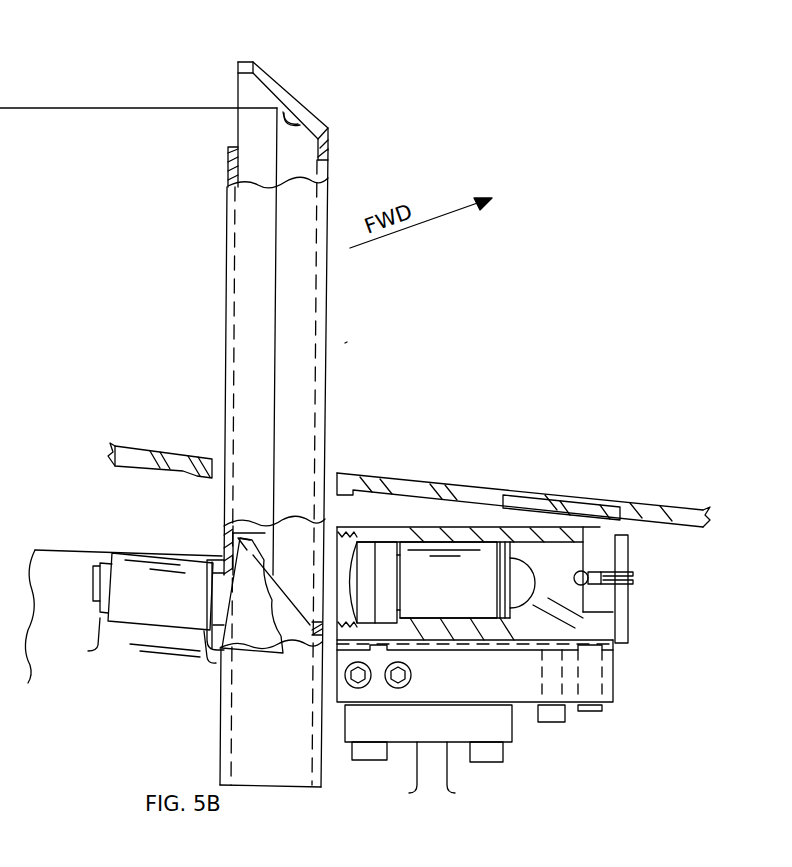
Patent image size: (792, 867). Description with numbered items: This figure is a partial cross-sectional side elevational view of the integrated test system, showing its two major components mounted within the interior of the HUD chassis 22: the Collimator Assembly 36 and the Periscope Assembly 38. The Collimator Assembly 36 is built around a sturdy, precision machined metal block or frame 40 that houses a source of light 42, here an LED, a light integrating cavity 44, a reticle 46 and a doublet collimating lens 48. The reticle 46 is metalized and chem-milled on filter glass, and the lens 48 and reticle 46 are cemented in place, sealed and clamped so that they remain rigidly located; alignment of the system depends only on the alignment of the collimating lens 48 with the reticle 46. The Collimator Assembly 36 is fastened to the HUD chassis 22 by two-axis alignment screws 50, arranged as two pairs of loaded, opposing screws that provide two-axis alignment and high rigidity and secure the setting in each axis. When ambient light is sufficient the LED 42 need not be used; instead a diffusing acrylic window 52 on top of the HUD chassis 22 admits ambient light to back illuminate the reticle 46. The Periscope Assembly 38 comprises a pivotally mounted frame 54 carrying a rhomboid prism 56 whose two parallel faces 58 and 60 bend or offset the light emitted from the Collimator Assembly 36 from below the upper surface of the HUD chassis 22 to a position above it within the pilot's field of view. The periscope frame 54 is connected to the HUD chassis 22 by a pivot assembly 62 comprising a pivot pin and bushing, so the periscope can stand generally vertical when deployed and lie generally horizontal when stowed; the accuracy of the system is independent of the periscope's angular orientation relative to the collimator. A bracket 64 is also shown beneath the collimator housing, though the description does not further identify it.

The HUD chassis 22 is at (445, 775).
The Collimator Assembly 36 is at (418, 500).
The Periscope Assembly 38 is at (345, 344).
The frame 40 is at (607, 628).
The source of light 42 is at (590, 570).
The light integrating cavity 44 is at (532, 537).
The reticle 46 is at (550, 538).
The doublet collimating lens 48 is at (368, 548).
The two-axis alignment screws 50 is at (398, 690).
The diffusing acrylic window 52 is at (512, 495).
The pivotally mounted frame 54 is at (304, 282).
The rhomboid prism 56 is at (263, 535).
The parallel face 58 is at (297, 605).
The parallel face 60 is at (295, 123).
The pivot assembly 62 is at (137, 613).
The bracket 64 is at (513, 727).